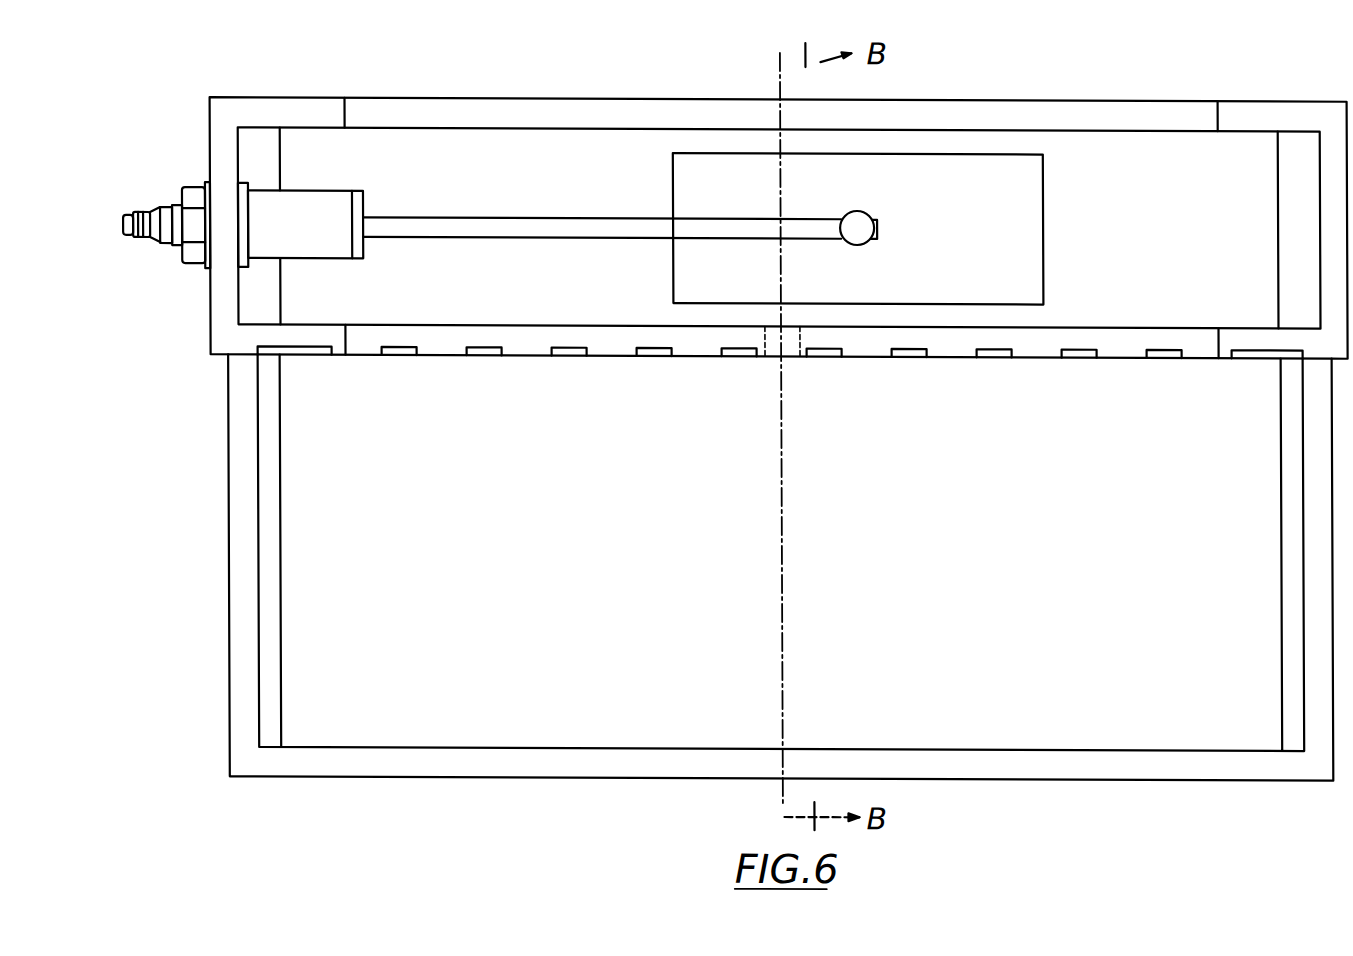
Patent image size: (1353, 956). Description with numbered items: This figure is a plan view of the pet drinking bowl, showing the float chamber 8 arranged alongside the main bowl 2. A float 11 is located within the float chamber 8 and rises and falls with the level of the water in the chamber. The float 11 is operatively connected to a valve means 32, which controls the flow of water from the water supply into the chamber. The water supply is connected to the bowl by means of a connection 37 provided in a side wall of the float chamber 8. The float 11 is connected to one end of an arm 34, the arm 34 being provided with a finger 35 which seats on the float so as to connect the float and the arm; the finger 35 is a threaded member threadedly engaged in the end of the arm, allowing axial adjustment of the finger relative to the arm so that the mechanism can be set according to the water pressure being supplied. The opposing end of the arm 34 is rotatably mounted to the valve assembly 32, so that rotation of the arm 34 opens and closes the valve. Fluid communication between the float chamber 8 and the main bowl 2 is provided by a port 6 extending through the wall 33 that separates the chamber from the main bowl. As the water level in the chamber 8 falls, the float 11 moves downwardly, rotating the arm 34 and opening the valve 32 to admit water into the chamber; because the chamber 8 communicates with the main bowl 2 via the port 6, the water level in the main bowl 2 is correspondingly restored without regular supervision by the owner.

The main bowl 2 is at (688, 566).
The port 6 is at (788, 343).
The float chamber 8 is at (1190, 240).
The float 11 is at (973, 193).
The valve means 32 is at (302, 224).
The wall 33 is at (608, 344).
The arm 34 is at (472, 227).
The finger 35 is at (855, 228).
The connection 37 is at (133, 208).